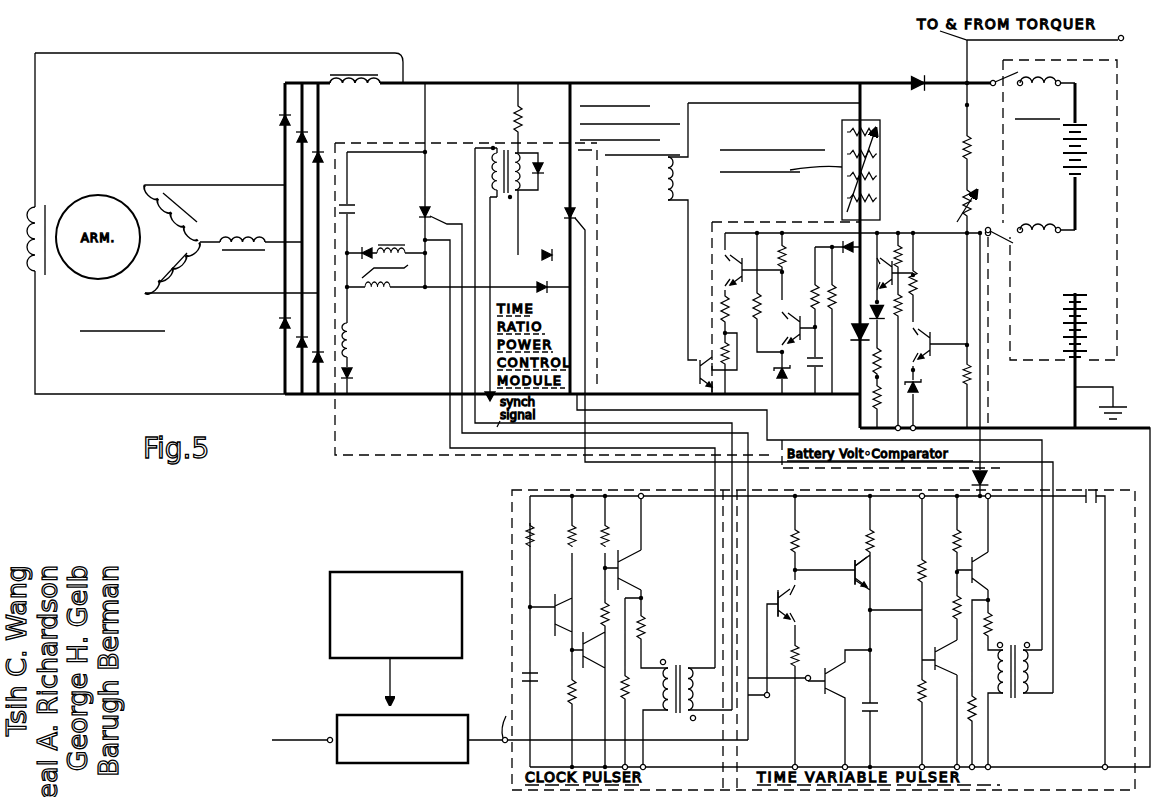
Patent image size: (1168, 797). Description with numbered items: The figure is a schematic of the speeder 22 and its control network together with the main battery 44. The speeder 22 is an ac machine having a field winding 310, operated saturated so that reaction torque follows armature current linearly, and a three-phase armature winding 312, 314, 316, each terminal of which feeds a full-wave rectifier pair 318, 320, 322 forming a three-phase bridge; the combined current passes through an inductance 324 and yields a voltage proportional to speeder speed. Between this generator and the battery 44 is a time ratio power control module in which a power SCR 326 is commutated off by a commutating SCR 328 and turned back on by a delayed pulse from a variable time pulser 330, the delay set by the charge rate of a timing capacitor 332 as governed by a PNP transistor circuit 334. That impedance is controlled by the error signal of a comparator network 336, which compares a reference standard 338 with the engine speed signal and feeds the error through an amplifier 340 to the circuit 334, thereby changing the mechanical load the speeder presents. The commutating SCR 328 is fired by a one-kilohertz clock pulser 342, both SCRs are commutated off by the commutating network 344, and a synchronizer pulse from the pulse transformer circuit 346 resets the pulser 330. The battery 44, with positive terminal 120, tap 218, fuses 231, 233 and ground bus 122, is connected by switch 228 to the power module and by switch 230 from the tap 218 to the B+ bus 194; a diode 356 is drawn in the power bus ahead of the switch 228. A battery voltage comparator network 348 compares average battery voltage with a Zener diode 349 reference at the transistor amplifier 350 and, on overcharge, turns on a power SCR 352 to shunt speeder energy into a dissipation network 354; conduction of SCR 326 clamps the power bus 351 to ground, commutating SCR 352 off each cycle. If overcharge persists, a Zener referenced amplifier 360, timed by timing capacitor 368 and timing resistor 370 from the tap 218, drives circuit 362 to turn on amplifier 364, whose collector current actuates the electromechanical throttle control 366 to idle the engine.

The speeder 22 is at (228, 303).
The battery 44 is at (1117, 163).
The positive terminal of the battery 120 is at (1078, 122).
The ground bus 122 is at (1115, 400).
The B+ bus 194 is at (786, 222).
The tap on the battery assembly 218 is at (1077, 228).
The switch 228 is at (999, 68).
The switch 230 is at (1018, 238).
The fuse 231 is at (1048, 80).
The fuse 233 is at (1058, 228).
The field winding 310 is at (40, 206).
The armature winding 312 is at (273, 212).
The armature winding 314 is at (185, 203).
The armature winding 316 is at (188, 276).
The rectifier pair 318 is at (306, 136).
The rectifier pair 320 is at (280, 121).
The rectifier pair 322 is at (322, 155).
The inductance 324 is at (385, 80).
The power SCR 326 is at (578, 213).
The commutating SCR 328 is at (430, 210).
The variable time pulser 330 is at (1065, 490).
The timing capacitor 332 is at (880, 712).
The PNP transistor circuit 334 is at (863, 568).
The comparator network 336 is at (406, 760).
The reference standard 338 is at (403, 649).
The amplifier 340 is at (787, 582).
The clock pulser 342 is at (512, 490).
The commutating network 344 is at (393, 291).
The pulse transformer circuit 346 is at (516, 170).
The battery voltage comparator network 348 is at (992, 470).
The Zener diode 349 is at (920, 392).
The transistor amplifier 350 is at (932, 338).
The power bus 351 is at (633, 83).
The power SCR 352 is at (856, 344).
The dissipation network 354 is at (842, 190).
The diode 356 is at (933, 64).
The Zener referenced amplifier 360 is at (786, 336).
The circuit 362 is at (748, 226).
The amplifier 364 is at (688, 356).
The electromechanical throttle control 366 is at (666, 168).
The timing capacitor 368 is at (813, 372).
The timing resistor 370 is at (825, 252).